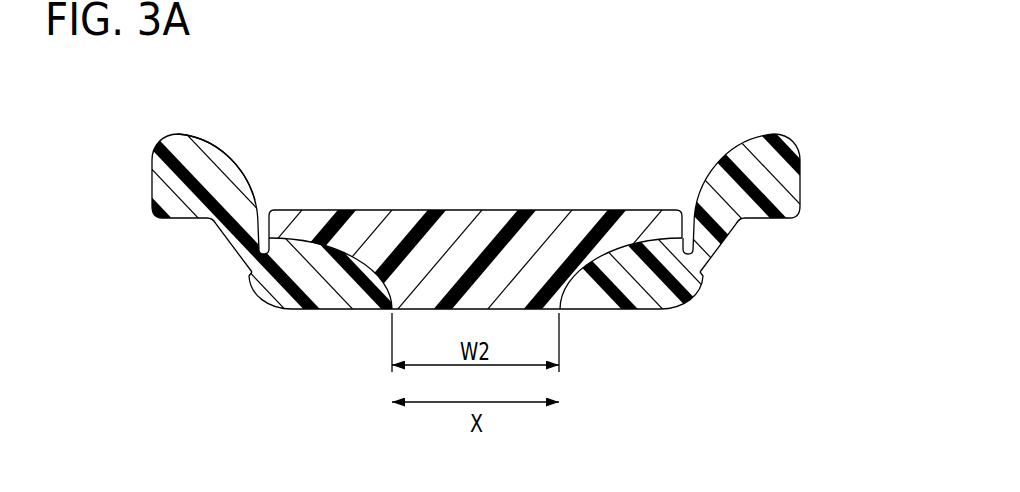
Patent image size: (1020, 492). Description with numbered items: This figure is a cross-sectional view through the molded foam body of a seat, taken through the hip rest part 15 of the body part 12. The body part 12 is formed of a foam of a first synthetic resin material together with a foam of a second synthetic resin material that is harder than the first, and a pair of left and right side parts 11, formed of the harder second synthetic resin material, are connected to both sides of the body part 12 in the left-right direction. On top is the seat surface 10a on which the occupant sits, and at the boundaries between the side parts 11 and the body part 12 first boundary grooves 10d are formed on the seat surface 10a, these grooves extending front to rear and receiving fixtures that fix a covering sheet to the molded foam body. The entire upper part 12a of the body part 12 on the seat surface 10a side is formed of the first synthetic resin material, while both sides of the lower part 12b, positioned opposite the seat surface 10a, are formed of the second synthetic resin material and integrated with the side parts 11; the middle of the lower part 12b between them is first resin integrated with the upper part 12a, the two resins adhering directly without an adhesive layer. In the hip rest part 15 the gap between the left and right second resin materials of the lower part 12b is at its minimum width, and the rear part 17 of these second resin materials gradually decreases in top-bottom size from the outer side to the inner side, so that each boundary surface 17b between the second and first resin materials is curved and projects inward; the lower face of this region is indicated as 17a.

The seat surface 10a is at (226, 151).
The first boundary grooves 10d is at (258, 218).
The side parts 11 is at (158, 135).
The body part 12 is at (478, 215).
The upper part 12a is at (428, 209).
The lower part 12b is at (703, 283).
The hip rest part 15 is at (503, 225).
The rear part 17 is at (292, 311).
The bottom surface of bonding portion 17a is at (558, 309).
The boundary surfaces 17b is at (622, 247).